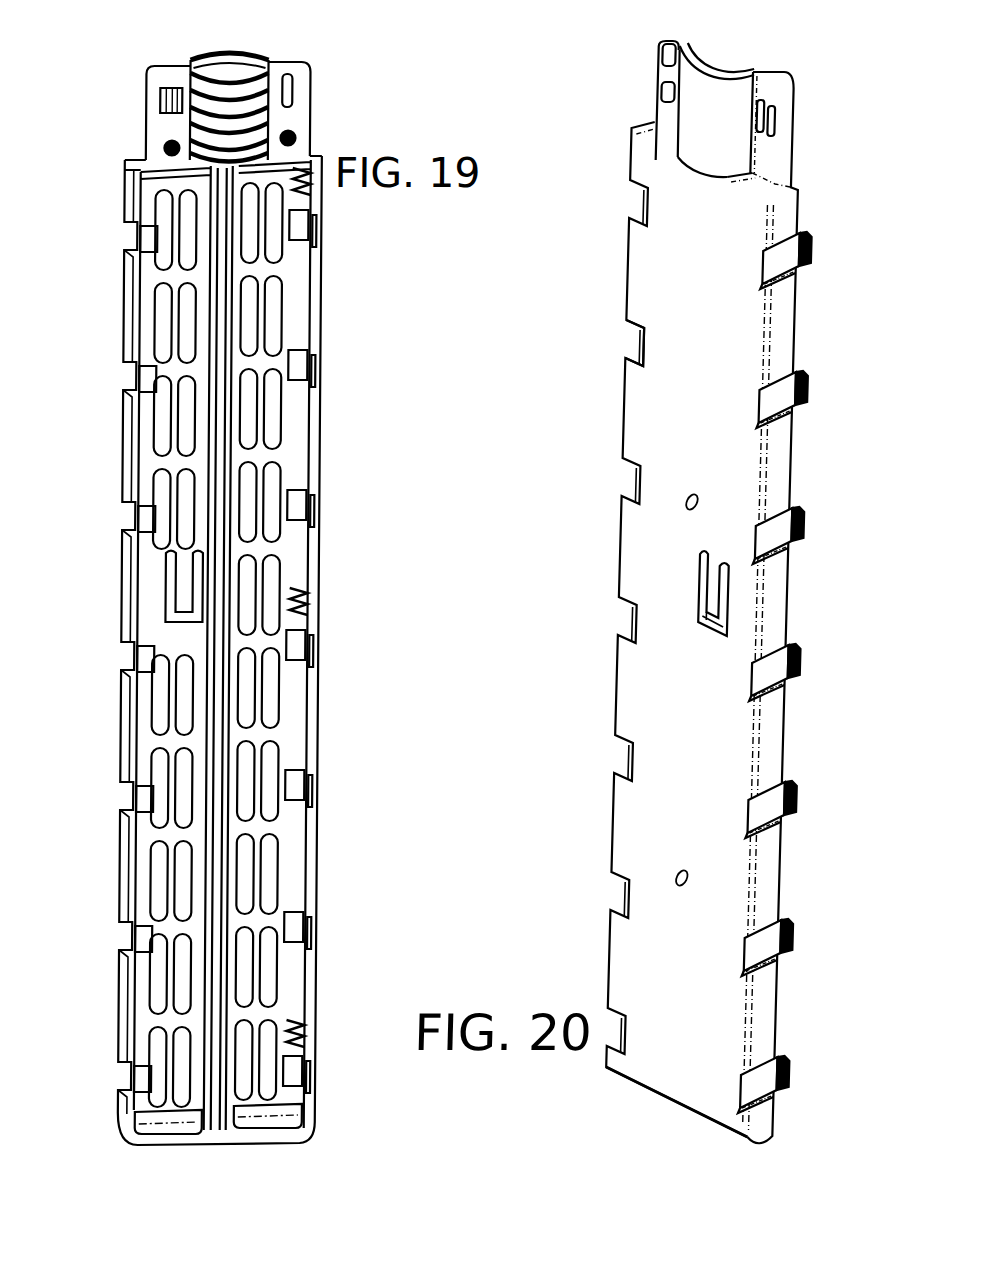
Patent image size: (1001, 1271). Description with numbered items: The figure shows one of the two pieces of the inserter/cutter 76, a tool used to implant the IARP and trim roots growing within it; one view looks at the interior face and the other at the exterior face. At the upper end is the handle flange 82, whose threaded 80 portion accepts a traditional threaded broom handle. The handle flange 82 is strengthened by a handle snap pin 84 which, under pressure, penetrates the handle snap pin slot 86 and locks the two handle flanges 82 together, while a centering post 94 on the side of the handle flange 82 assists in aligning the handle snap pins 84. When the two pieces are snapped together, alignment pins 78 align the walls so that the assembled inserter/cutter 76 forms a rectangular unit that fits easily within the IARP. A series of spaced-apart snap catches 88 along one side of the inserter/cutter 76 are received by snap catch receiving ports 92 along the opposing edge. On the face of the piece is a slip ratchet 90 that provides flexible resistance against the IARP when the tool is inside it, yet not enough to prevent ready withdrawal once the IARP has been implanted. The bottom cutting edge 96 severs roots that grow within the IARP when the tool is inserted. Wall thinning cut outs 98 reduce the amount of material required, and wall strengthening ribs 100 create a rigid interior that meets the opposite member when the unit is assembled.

In FIG. 19, the inserter/cutter 76 is at (342, 305).
In FIG. 20, the inserter/cutter 76 is at (622, 542).
In FIG. 19, the alignment pins 78 is at (311, 602).
In FIG. 19, the threaded portion 80 is at (237, 80).
In FIG. 19, the handle flange 82 is at (146, 84).
In FIG. 20, the handle flange 82 is at (776, 88).
In FIG. 19, the handle snap pin 84 is at (161, 104).
In FIG. 19, the handle snap pin slot 86 is at (294, 88).
In FIG. 19, the snap catches 88 is at (138, 653).
In FIG. 20, the snap catches 88 is at (816, 513).
In FIG. 19, the slip ratchet 90 is at (190, 577).
In FIG. 20, the slip ratchet 90 is at (736, 590).
In FIG. 20, the snap catch receiving ports 92 is at (649, 330).
In FIG. 19, the centering post 94 is at (300, 137).
In FIG. 20, the bottom cutting edge 96 is at (697, 1095).
In FIG. 19, the wall thinning cut outs 98 is at (170, 890).
In FIG. 19, the wall strengthening ribs 100 is at (236, 740).